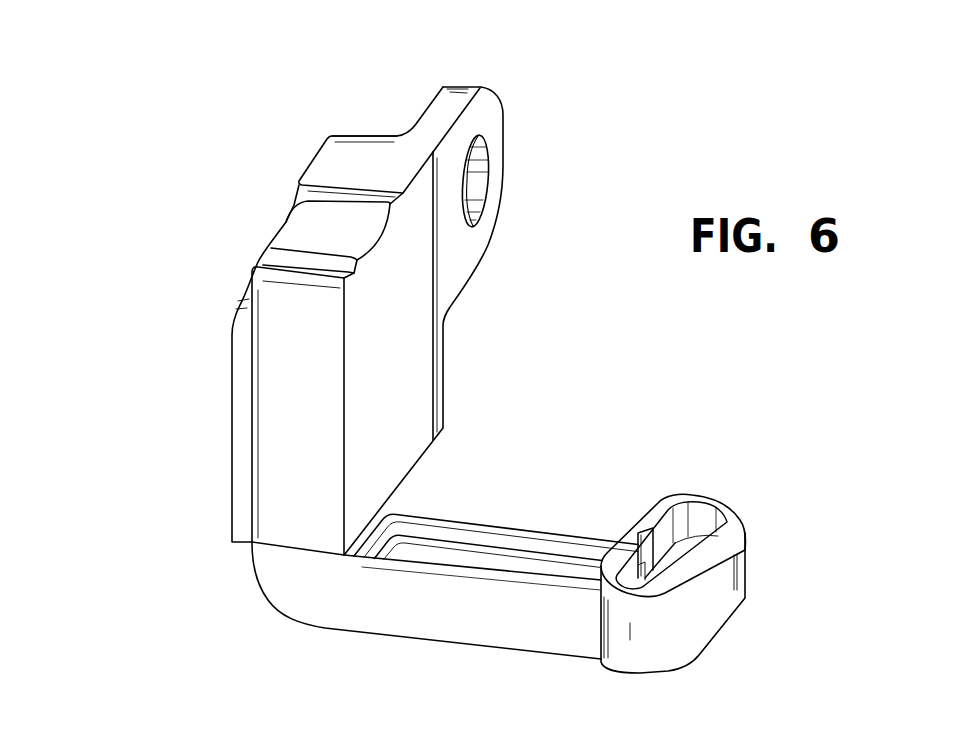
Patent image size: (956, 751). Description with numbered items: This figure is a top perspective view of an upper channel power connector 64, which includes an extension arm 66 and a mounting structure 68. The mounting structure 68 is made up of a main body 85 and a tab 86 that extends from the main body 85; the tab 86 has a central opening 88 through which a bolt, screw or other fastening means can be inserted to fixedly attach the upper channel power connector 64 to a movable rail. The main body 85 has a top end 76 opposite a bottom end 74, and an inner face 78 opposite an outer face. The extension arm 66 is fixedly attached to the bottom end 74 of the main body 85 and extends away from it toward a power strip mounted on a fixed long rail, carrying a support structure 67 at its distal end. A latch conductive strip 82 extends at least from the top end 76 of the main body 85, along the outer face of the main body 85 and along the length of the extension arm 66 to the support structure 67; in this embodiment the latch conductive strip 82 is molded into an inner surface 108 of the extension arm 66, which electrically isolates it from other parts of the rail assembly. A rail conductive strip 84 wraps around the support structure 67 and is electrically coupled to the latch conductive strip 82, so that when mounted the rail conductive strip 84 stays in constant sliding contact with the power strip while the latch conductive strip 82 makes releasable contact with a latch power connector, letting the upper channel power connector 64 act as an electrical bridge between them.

The upper channel power connector 64 is at (95, 424).
The extension arm 66 is at (423, 615).
The support structure 67 is at (683, 555).
The mounting structure 68 is at (465, 397).
The bottom end 74 is at (242, 574).
The top end 76 is at (370, 160).
The inner face 78 is at (403, 358).
The latch conductive strip 82 is at (285, 220).
The rail conductive strip 84 is at (722, 584).
The main body 85 is at (265, 360).
The tab 86 is at (484, 64).
The central opening 88 is at (476, 181).
The inner surface 108 is at (525, 495).